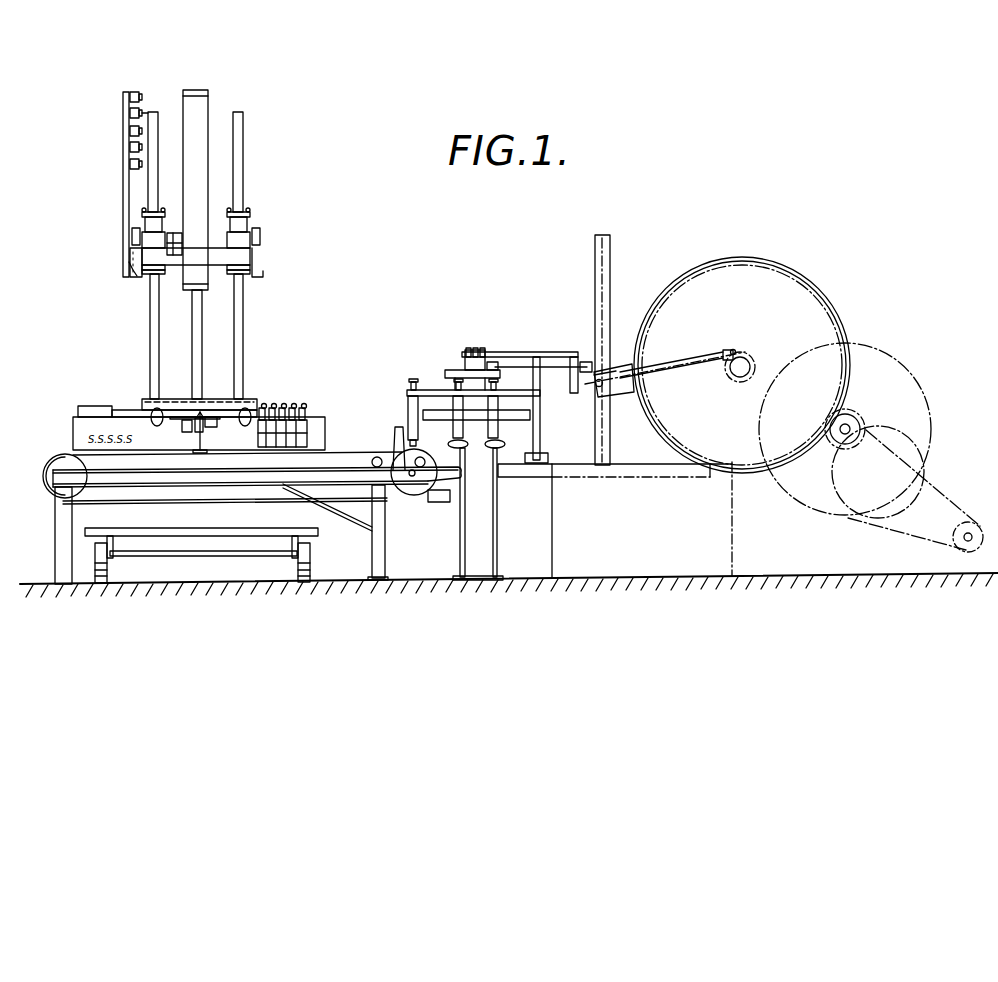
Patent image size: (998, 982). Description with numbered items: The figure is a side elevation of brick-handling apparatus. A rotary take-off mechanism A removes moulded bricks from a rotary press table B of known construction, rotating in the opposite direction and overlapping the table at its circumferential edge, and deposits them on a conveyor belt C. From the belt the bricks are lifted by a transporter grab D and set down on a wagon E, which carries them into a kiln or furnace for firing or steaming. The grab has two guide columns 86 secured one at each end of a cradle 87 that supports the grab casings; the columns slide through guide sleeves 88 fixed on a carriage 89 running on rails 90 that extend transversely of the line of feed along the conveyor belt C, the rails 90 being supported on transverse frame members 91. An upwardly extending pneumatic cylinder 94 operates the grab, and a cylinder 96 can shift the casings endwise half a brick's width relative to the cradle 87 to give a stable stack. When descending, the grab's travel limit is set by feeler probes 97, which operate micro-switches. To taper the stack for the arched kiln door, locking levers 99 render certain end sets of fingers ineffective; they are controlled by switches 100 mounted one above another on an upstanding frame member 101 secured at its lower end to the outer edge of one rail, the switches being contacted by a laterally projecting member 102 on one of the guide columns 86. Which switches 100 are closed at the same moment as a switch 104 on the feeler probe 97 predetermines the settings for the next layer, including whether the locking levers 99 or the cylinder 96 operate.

The rotary take-off mechanism A is at (470, 363).
The rotary press table B is at (665, 470).
The conveyor belt C is at (343, 448).
The transporter grab D is at (203, 353).
The wagon E is at (90, 527).
The guide columns 86 is at (148, 178).
The cradle 87 is at (227, 405).
The guide sleeves 88 is at (253, 267).
The carriage 89 is at (142, 238).
The rails 90 is at (132, 250).
The transverse frame members 91 is at (137, 276).
The pneumatic cylinder 94 is at (192, 187).
The cylinder 96 is at (96, 406).
The feeler probes 97 is at (210, 438).
The locking levers 99 is at (300, 410).
The switches 100 is at (129, 148).
The upstanding frame member 101 is at (123, 163).
The laterally projecting member 102 is at (142, 113).
The switch 104 is at (182, 428).